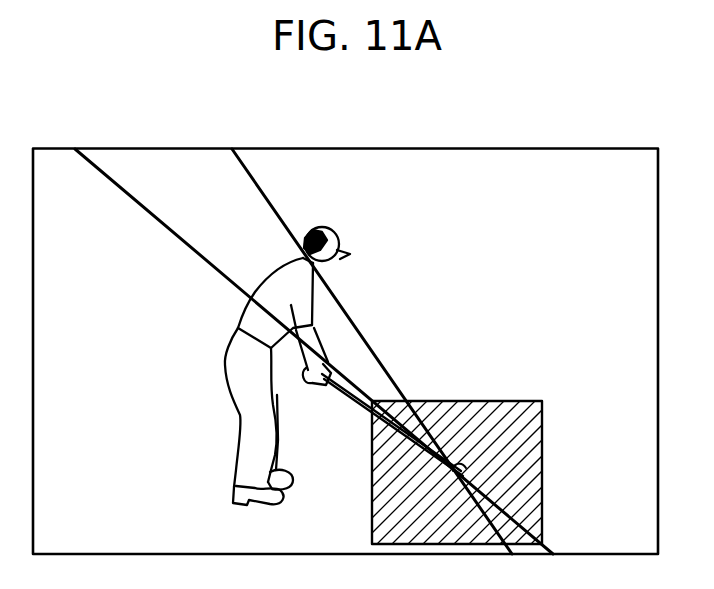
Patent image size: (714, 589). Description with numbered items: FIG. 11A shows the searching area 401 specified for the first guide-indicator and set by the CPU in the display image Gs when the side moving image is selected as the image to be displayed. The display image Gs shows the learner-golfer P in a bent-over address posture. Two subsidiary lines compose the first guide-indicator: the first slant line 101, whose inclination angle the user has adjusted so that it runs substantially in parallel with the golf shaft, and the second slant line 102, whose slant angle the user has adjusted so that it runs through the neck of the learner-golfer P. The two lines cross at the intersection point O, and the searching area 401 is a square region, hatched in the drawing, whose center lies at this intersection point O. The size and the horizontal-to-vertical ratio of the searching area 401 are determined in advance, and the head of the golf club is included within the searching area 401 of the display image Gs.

The display image Gs is at (558, 148).
The first slant line 101 is at (159, 222).
The second slant line 102 is at (260, 187).
The searching area 401 is at (543, 448).
The learner-golfer P is at (268, 280).
The intersection point O is at (461, 462).